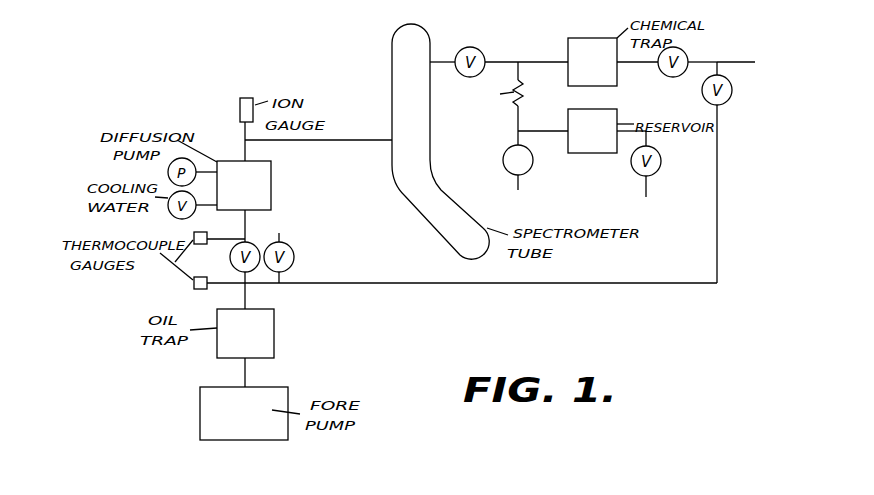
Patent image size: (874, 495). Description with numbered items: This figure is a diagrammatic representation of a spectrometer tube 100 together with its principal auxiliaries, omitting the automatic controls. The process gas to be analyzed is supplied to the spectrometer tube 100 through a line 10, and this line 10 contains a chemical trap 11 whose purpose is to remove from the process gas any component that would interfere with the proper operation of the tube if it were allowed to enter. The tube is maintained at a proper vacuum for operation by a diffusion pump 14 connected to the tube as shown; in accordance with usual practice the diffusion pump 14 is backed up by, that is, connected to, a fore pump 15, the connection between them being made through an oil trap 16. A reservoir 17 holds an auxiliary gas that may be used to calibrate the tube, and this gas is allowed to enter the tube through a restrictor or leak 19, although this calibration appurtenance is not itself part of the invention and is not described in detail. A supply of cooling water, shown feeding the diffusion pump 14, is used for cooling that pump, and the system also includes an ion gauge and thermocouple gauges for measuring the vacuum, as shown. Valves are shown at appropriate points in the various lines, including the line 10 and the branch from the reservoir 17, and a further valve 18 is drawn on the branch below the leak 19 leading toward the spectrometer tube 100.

The spectrometer tube 100 is at (419, 27).
The chemical trap 11 is at (578, 42).
The line 10 is at (717, 62).
The leak 19 is at (524, 93).
The valve 18 is at (514, 136).
The reservoir 17 is at (590, 150).
The diffusion pump 14 is at (271, 182).
The oil trap 16 is at (274, 330).
The fore pump 15 is at (267, 390).